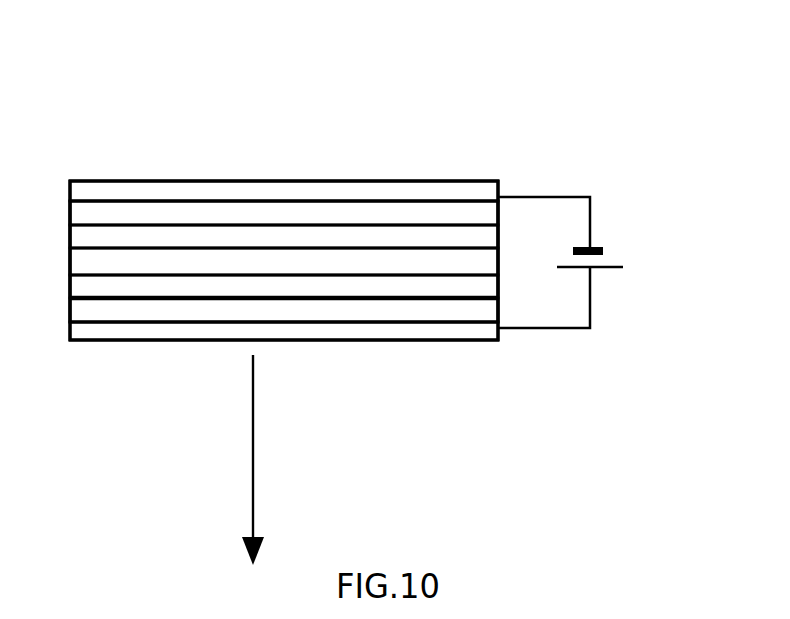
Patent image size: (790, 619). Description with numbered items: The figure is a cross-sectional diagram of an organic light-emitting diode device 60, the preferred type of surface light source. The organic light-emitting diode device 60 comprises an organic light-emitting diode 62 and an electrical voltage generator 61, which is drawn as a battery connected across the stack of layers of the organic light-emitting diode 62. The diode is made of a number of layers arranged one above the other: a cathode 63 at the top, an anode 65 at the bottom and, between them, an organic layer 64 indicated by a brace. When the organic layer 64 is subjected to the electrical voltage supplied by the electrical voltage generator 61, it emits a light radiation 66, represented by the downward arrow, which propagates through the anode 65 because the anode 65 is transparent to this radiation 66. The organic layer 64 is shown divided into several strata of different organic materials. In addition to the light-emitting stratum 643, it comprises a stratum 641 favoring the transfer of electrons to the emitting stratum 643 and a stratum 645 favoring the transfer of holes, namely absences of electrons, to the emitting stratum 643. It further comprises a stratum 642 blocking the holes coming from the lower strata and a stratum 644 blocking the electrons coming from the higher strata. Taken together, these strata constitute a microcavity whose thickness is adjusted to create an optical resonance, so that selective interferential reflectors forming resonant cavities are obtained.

The organic light-emitting diode device 60 is at (637, 172).
The electrical voltage generator 61 is at (598, 272).
The organic light-emitting diode 62 is at (171, 166).
The cathode 63 is at (473, 192).
The organic layer 64 is at (65, 202).
The electron transfer stratum 641 is at (422, 215).
The hole-blocking stratum 642 is at (357, 238).
The light-emitting stratum 643 is at (117, 263).
The electron-blocking stratum 644 is at (417, 287).
The hole transfer stratum 645 is at (363, 315).
The anode 65 is at (297, 332).
The light radiation 66 is at (253, 445).